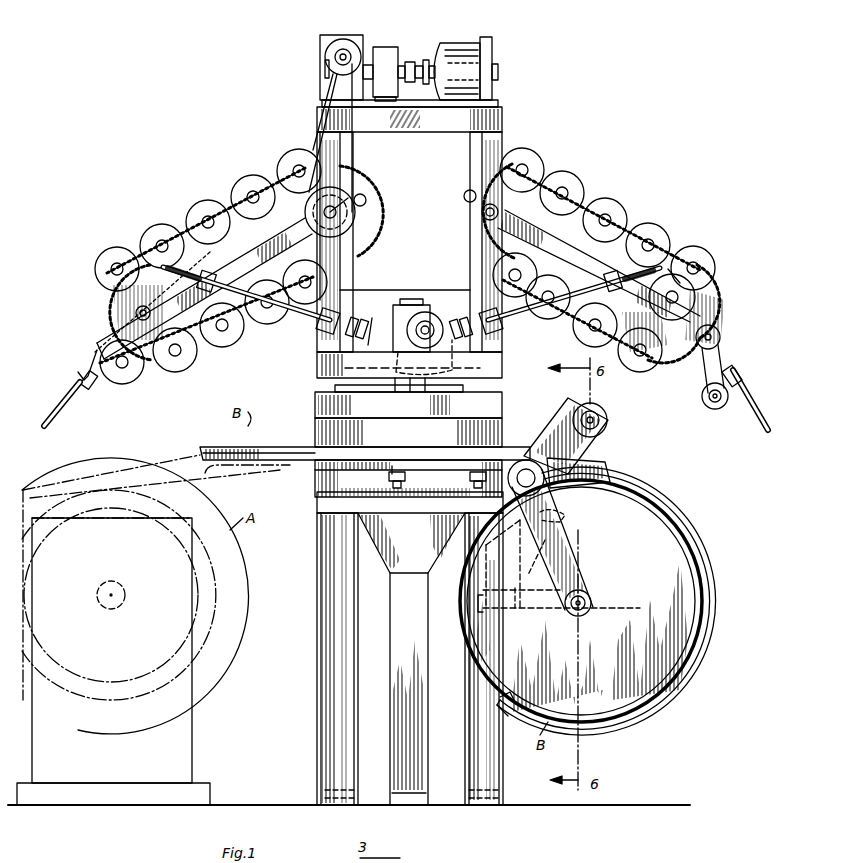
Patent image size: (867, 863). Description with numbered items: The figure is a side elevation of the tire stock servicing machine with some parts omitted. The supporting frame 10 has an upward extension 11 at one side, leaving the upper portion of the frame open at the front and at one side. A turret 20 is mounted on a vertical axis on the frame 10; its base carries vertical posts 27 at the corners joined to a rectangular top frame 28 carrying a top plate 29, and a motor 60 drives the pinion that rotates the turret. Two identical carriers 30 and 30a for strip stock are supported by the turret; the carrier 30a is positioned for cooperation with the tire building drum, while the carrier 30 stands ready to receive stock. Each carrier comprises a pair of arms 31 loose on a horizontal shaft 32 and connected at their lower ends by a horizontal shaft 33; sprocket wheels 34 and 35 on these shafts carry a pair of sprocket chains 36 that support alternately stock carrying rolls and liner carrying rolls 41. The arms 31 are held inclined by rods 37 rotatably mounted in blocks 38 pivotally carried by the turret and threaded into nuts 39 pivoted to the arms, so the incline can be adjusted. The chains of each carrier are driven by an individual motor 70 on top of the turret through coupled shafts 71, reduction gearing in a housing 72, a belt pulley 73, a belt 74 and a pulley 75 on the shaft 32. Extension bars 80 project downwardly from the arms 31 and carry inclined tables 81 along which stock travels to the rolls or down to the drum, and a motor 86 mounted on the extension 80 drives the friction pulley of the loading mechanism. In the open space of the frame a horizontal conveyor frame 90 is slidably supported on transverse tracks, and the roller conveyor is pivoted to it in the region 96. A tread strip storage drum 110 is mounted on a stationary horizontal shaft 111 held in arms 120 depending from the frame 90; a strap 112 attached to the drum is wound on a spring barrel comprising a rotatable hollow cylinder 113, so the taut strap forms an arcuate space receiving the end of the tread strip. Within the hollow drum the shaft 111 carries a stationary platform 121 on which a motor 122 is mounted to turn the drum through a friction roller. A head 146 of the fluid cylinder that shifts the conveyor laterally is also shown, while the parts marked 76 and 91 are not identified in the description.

The supporting frame 10 is at (318, 619).
The upward extension 11 is at (318, 477).
The turret 20 is at (313, 344).
The vertical posts 27 is at (338, 314).
The rectangular top frame 28 is at (503, 118).
The top plate 29 is at (378, 323).
The carrier 30 is at (667, 212).
The carrier 30a is at (178, 200).
The arms 31 is at (398, 284).
The horizontal shaft 32 is at (356, 190).
The horizontal shaft 33 is at (136, 310).
The sprocket wheels 34 is at (372, 198).
The sprocket wheels 35 is at (160, 355).
The sprocket chains 36 is at (178, 230).
The rods 37 is at (407, 312).
The blocks 38 is at (318, 325).
The nuts 39 is at (574, 285).
The liner carrying rolls 41 is at (203, 270).
The motor 60 is at (430, 318).
The motor 70 is at (460, 50).
The coupled shafts 71 is at (406, 64).
The housing 72 is at (320, 43).
The belt pulley 73 is at (347, 45).
The belt 74 is at (320, 118).
The pulley 75 is at (352, 230).
The guide 76 is at (106, 333).
The extension bars 80 is at (680, 365).
The inclined tables 81 is at (64, 408).
The motor 86 is at (690, 300).
The horizontal frame 90 is at (390, 476).
The slide bracket 91 is at (372, 548).
The pivot region 96 is at (523, 458).
The drum 110 is at (672, 546).
The stationary horizontal shaft 111 is at (589, 610).
The strap 112 is at (640, 712).
The rotatable hollow cylinder 113 is at (600, 427).
The arms 120 is at (560, 522).
The stationary platform 121 is at (559, 566).
The motor 122 is at (530, 576).
The head 146 is at (530, 470).